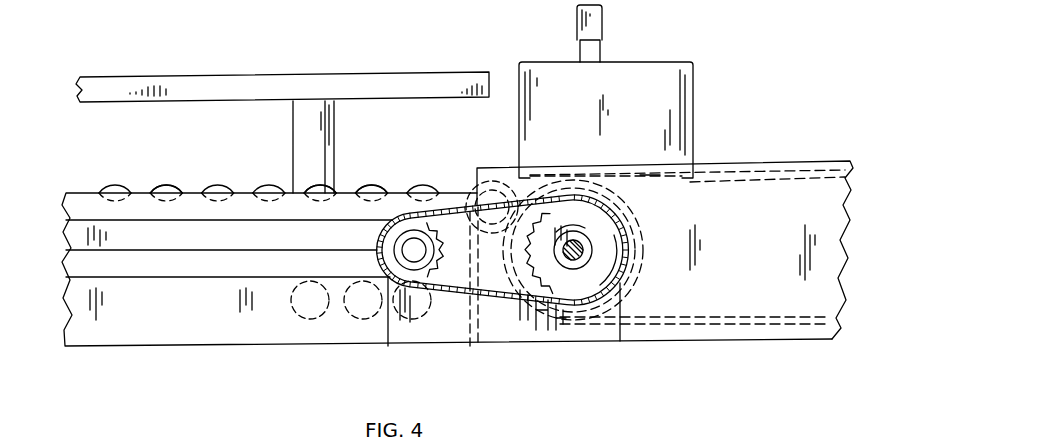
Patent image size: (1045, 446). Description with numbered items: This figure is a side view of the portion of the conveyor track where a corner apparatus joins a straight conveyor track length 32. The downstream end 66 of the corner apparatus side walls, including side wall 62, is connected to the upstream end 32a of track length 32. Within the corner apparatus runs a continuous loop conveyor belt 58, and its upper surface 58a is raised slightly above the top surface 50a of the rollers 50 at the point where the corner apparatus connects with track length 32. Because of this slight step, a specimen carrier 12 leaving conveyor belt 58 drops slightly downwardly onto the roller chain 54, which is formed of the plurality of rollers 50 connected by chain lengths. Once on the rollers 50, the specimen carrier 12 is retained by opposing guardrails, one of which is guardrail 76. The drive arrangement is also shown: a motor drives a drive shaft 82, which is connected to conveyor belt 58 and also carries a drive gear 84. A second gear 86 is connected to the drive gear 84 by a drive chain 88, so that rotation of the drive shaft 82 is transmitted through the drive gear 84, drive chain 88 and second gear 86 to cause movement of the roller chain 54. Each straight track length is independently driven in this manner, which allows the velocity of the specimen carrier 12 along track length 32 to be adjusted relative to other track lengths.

The specimen carrier 12 is at (652, 92).
The track length 32 is at (177, 335).
The upstream end 32a is at (440, 330).
The rollers 50 is at (267, 190).
The upper surface 50a is at (377, 182).
The roller chain 54 is at (165, 192).
The conveyor belt 58 is at (748, 175).
The upper surface 58a is at (640, 175).
The side wall 62 is at (713, 337).
The downstream end 66 is at (543, 342).
The guardrail 76 is at (365, 85).
The drive shaft 82 is at (573, 265).
The drive gear 84 is at (602, 268).
The second gear 86 is at (395, 283).
The drive chain 88 is at (503, 298).